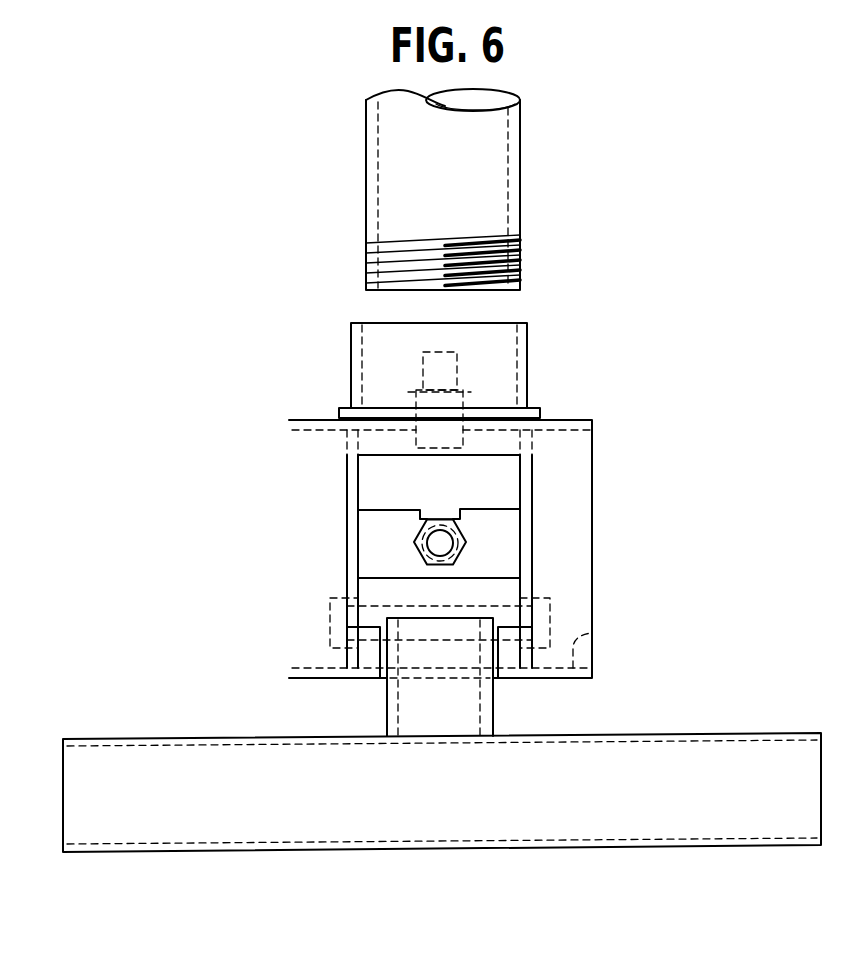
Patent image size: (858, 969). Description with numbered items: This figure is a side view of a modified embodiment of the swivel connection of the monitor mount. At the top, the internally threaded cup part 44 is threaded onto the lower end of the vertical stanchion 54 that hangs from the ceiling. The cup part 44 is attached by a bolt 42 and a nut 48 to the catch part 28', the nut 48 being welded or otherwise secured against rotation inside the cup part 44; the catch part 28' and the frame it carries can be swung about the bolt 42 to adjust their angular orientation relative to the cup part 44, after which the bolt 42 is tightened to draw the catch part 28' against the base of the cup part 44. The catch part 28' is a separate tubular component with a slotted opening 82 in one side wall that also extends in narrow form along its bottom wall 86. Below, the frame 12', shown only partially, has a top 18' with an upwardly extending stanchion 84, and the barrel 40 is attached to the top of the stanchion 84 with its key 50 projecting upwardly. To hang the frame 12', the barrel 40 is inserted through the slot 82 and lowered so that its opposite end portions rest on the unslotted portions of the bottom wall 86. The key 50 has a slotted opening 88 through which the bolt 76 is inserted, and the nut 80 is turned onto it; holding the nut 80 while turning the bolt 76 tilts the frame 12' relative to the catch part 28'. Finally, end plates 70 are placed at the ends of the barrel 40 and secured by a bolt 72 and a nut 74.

The stanchion 54 is at (366, 150).
The cup part 44 is at (351, 345).
The bolt 42 is at (457, 362).
The nut 48 is at (463, 394).
The catch part 28' is at (462, 520).
The end plates 70 is at (347, 548).
The slotted opening 82 is at (512, 479).
The key 50 is at (512, 520).
The nut 80 is at (460, 549).
The bolt 76 is at (426, 546).
The slotted opening 88 is at (440, 518).
The barrel 40 is at (513, 586).
The bolt 72 is at (330, 614).
The nut 74 is at (550, 613).
The bottom wall 86 is at (592, 633).
The stanchion 84 is at (493, 712).
The frame 12' is at (442, 762).
The top 18' is at (442, 711).